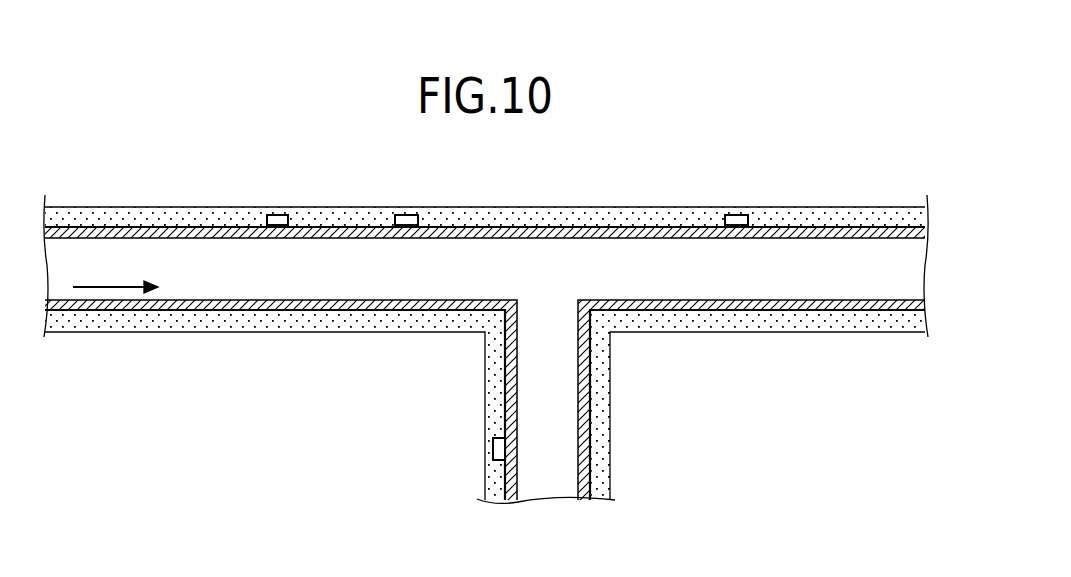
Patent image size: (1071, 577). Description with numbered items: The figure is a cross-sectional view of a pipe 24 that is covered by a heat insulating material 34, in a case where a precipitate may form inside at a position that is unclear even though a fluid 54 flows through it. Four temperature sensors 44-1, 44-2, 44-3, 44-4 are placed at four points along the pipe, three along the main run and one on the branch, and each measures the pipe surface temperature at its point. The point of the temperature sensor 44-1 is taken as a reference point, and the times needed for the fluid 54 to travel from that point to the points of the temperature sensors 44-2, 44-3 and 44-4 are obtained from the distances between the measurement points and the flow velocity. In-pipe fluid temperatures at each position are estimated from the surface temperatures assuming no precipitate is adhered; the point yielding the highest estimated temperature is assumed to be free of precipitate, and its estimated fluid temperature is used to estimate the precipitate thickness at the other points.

The pipe 24 is at (608, 303).
The heat insulating material 34 is at (657, 218).
The temperature sensor 44-1 is at (280, 214).
The temperature sensor 44-2 is at (411, 214).
The temperature sensor 44-3 is at (737, 214).
The temperature sensor 44-4 is at (493, 447).
The fluid 54 is at (120, 285).